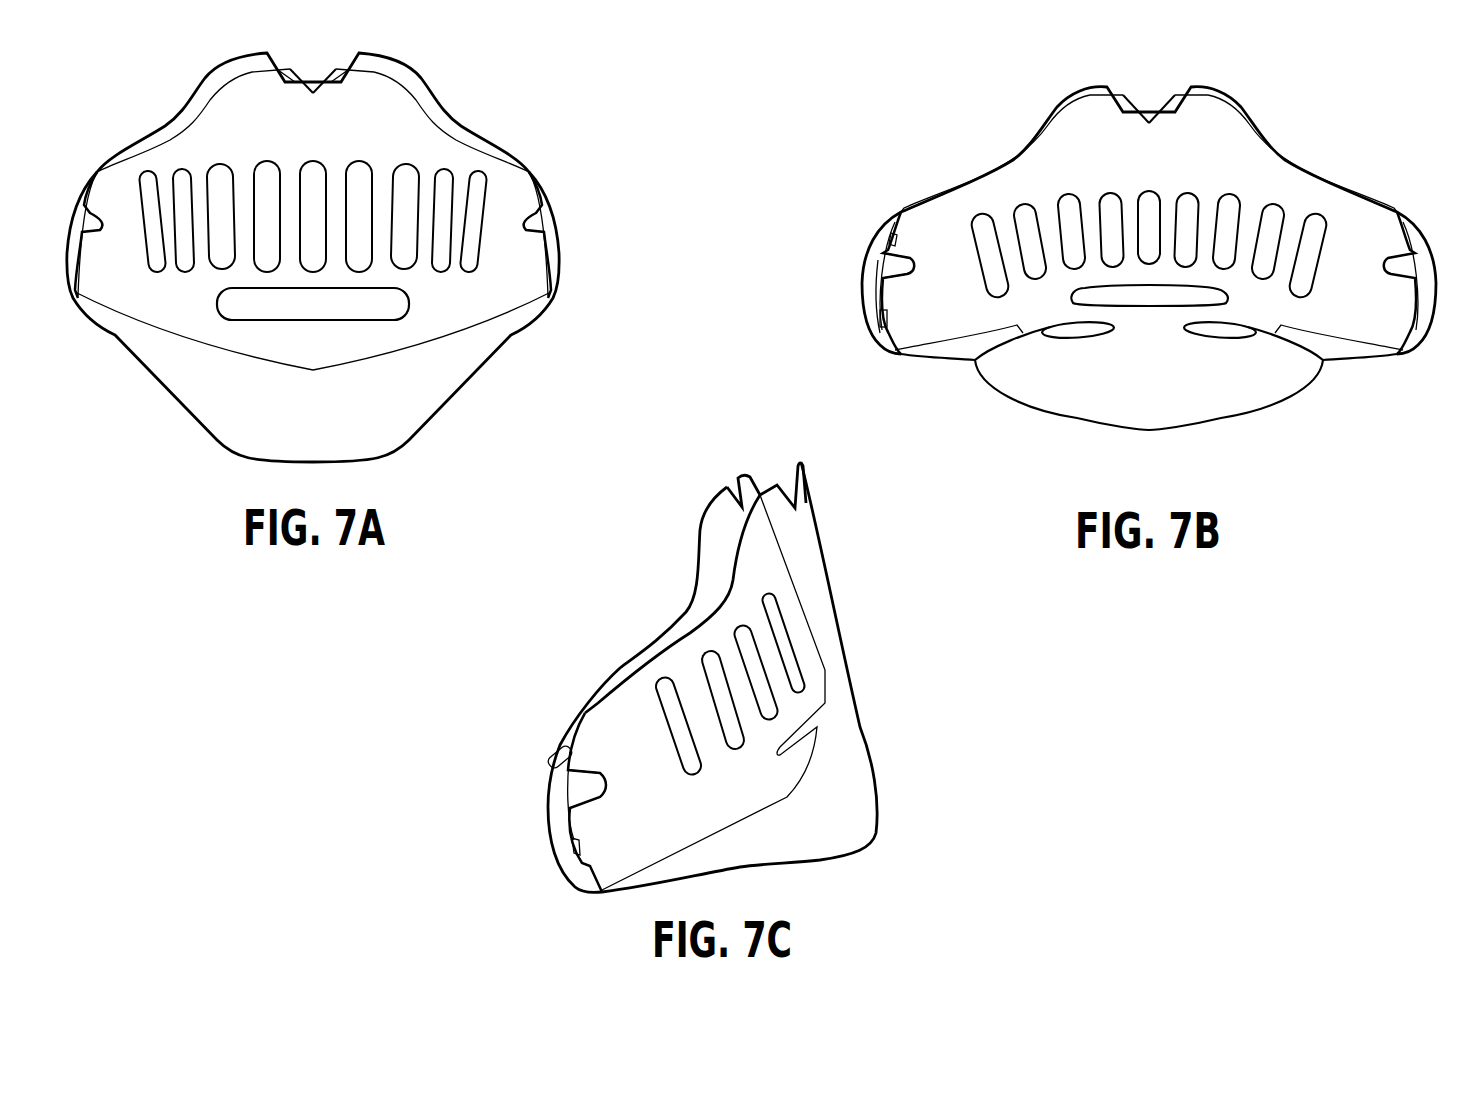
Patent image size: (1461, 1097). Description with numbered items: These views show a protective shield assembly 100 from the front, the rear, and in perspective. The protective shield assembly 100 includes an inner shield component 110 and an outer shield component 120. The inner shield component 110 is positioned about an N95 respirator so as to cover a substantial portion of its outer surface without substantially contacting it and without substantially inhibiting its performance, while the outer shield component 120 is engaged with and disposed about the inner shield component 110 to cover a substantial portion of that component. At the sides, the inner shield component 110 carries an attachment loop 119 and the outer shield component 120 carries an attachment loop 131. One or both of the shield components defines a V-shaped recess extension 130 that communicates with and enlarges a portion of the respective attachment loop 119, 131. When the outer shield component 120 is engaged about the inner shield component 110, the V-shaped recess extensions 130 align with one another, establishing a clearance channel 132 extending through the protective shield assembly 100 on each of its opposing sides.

In FIG. 7A, the protective shield assembly 100 is at (484, 99).
In FIG. 7B, the protective shield assembly 100 is at (962, 113).
In FIG. 7C, the protective shield assembly 100 is at (627, 574).
In FIG. 7A, the inner shield component 110 is at (192, 287).
In FIG. 7B, the inner shield component 110 is at (948, 312).
In FIG. 7C, the inner shield component 110 is at (610, 868).
In FIG. 7A, the outer shield component 120 is at (417, 410).
In FIG. 7B, the outer shield component 120 is at (1127, 163).
In FIG. 7C, the outer shield component 120 is at (828, 803).
In FIG. 7B, the "V"-shaped recess extension 130 is at (878, 263).
In FIG. 7C, the "V"-shaped recess extension 130 is at (569, 788).
In FIG. 7B, the attachment loop 131 is at (880, 322).
In FIG. 7C, the attachment loop 131 is at (565, 842).
In FIG. 7B, the clearance channel 132 is at (880, 244).
In FIG. 7C, the clearance channel 132 is at (576, 764).
In FIG. 7B, the attachment loop 119 is at (876, 290).
In FIG. 7C, the attachment loop 119 is at (567, 817).